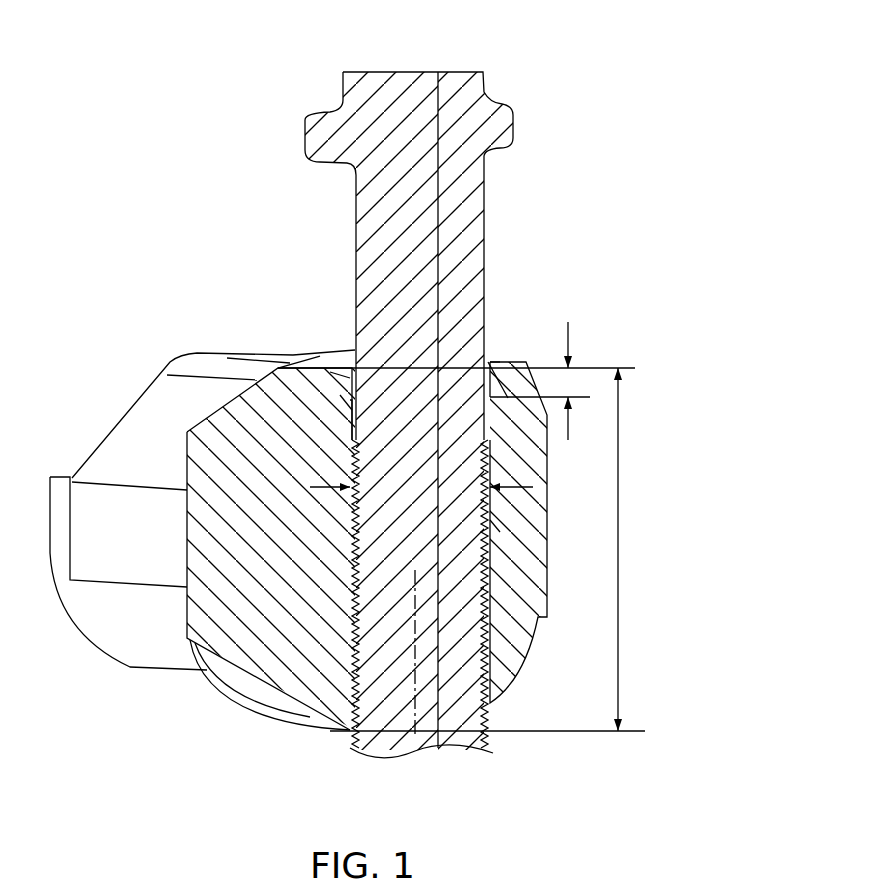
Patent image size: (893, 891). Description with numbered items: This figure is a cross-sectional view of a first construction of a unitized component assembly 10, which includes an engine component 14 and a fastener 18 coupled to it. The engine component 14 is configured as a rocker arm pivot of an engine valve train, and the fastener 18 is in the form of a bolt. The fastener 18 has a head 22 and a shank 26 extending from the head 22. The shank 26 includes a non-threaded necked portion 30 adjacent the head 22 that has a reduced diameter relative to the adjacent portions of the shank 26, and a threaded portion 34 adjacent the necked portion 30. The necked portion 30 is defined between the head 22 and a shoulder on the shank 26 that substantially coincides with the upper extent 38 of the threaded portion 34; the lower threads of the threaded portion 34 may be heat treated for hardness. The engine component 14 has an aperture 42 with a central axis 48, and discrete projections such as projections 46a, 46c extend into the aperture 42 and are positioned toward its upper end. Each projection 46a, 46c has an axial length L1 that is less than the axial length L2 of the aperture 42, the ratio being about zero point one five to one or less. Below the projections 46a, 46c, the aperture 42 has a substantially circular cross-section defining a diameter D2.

The unitized component assembly 10 is at (582, 76).
The engine component 14 is at (210, 370).
The fastener 18 is at (427, 407).
The head 22 is at (343, 86).
The shank 26 is at (470, 266).
The necked portion 30 is at (357, 240).
The threaded portion 34 is at (345, 566).
The upper extent of the threaded portion 38 is at (348, 436).
The aperture 42 is at (348, 408).
The projection 46a is at (345, 380).
The projection 46c is at (500, 362).
The central axis 48 is at (412, 600).
The diameter D2 is at (317, 497).
The axial length of projection L1 is at (570, 340).
The axial length of aperture L2 is at (620, 545).